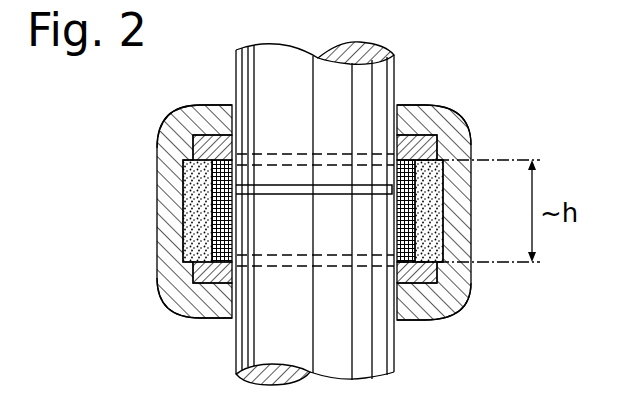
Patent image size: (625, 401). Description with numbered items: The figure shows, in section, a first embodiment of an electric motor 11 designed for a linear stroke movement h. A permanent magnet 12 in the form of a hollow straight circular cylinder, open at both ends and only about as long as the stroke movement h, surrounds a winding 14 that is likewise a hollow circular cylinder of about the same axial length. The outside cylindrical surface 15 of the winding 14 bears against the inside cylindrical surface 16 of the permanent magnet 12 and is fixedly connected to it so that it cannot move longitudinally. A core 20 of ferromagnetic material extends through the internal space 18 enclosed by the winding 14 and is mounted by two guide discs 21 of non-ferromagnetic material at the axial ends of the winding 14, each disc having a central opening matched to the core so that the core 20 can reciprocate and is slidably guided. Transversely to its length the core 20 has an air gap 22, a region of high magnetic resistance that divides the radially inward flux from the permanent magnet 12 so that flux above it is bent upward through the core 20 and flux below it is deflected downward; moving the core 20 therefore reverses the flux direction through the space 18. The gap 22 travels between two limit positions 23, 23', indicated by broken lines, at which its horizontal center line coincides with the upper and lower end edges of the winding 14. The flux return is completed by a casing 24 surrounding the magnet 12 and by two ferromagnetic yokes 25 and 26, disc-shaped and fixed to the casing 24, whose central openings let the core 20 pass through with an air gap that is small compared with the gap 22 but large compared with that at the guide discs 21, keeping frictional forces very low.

The electric motor 11 is at (460, 171).
The permanent magnet 12 is at (190, 203).
The winding 14 is at (445, 226).
The outside cylindrical surface 15 is at (192, 150).
The inside cylindrical surface 16 is at (190, 245).
The internal space 18 is at (465, 289).
The core 20 is at (395, 92).
The guide discs 21 is at (172, 208).
The air gap 22 is at (458, 193).
The end position 23 is at (315, 130).
The end position 23' is at (315, 288).
The casing 24 is at (472, 138).
The yoke 25 is at (214, 120).
The yoke 26 is at (203, 305).